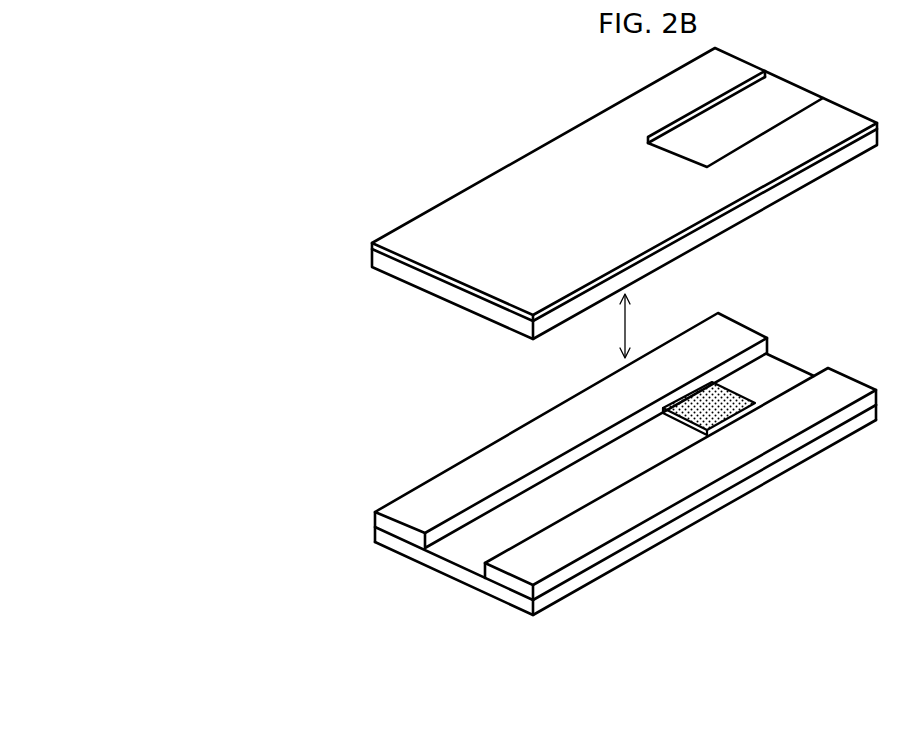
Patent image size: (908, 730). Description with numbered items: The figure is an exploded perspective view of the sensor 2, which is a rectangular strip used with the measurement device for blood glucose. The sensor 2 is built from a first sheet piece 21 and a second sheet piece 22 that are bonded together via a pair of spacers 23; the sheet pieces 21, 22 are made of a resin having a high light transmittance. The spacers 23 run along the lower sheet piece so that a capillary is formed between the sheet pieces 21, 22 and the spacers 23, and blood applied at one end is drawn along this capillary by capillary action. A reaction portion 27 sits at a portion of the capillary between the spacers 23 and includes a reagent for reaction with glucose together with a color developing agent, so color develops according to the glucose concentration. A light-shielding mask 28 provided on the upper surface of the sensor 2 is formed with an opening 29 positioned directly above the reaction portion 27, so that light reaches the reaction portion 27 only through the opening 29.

The sensor 2 is at (447, 126).
The first sheet piece 21 is at (457, 571).
The second sheet piece 22 is at (430, 285).
The spacers 23 is at (457, 483).
The reaction portion 27 is at (694, 400).
The light-shielding mask 28 is at (540, 170).
The opening 29 is at (768, 89).